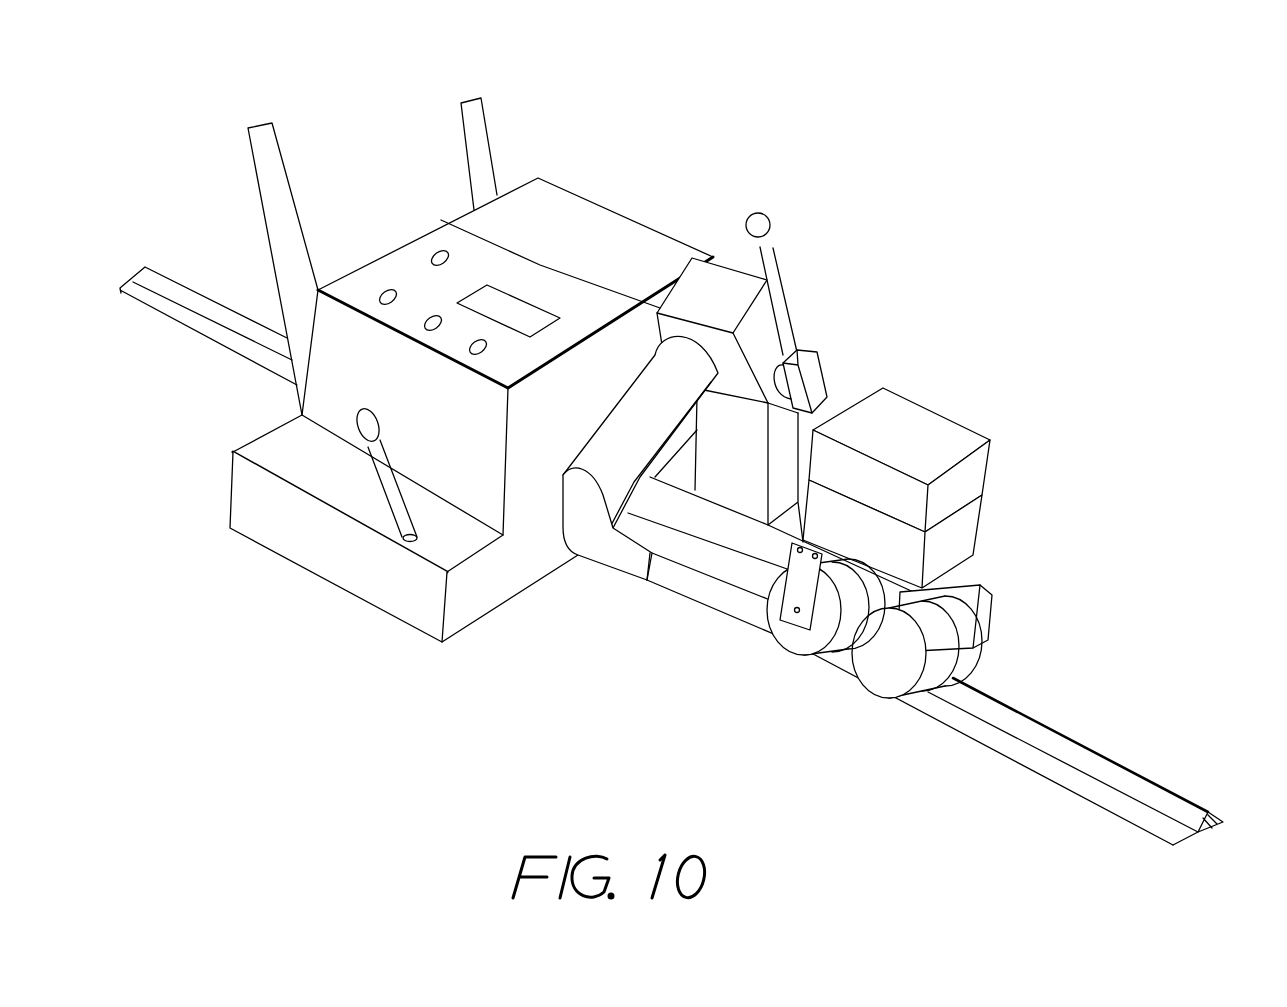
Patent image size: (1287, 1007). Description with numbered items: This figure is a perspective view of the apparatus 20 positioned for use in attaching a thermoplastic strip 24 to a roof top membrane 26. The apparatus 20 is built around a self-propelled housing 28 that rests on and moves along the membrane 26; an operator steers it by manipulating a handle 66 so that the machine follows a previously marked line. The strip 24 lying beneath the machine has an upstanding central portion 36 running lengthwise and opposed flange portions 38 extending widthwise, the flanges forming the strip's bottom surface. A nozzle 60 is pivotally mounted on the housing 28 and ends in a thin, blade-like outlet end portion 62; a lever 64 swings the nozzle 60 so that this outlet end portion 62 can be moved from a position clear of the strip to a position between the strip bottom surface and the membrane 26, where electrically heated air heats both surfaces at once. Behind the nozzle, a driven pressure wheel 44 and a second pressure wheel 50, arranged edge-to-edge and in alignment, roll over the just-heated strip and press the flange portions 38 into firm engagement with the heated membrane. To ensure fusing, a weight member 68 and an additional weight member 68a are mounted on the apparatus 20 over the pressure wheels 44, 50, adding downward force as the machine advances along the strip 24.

The apparatus 20 is at (580, 143).
The strip 24 is at (1103, 757).
The membrane 26 is at (736, 713).
The housing 28 is at (477, 210).
The central portion 36 is at (1148, 782).
The flange portions 38 is at (1128, 807).
The pressure wheel 44 is at (793, 640).
The second pressure wheel 50 is at (967, 640).
The nozzle 60 is at (625, 410).
The outlet end portion 62 is at (635, 560).
The lever 64 is at (785, 303).
The handle 66 is at (272, 175).
The weight member 68 is at (970, 528).
The additional weight member 68a is at (970, 467).